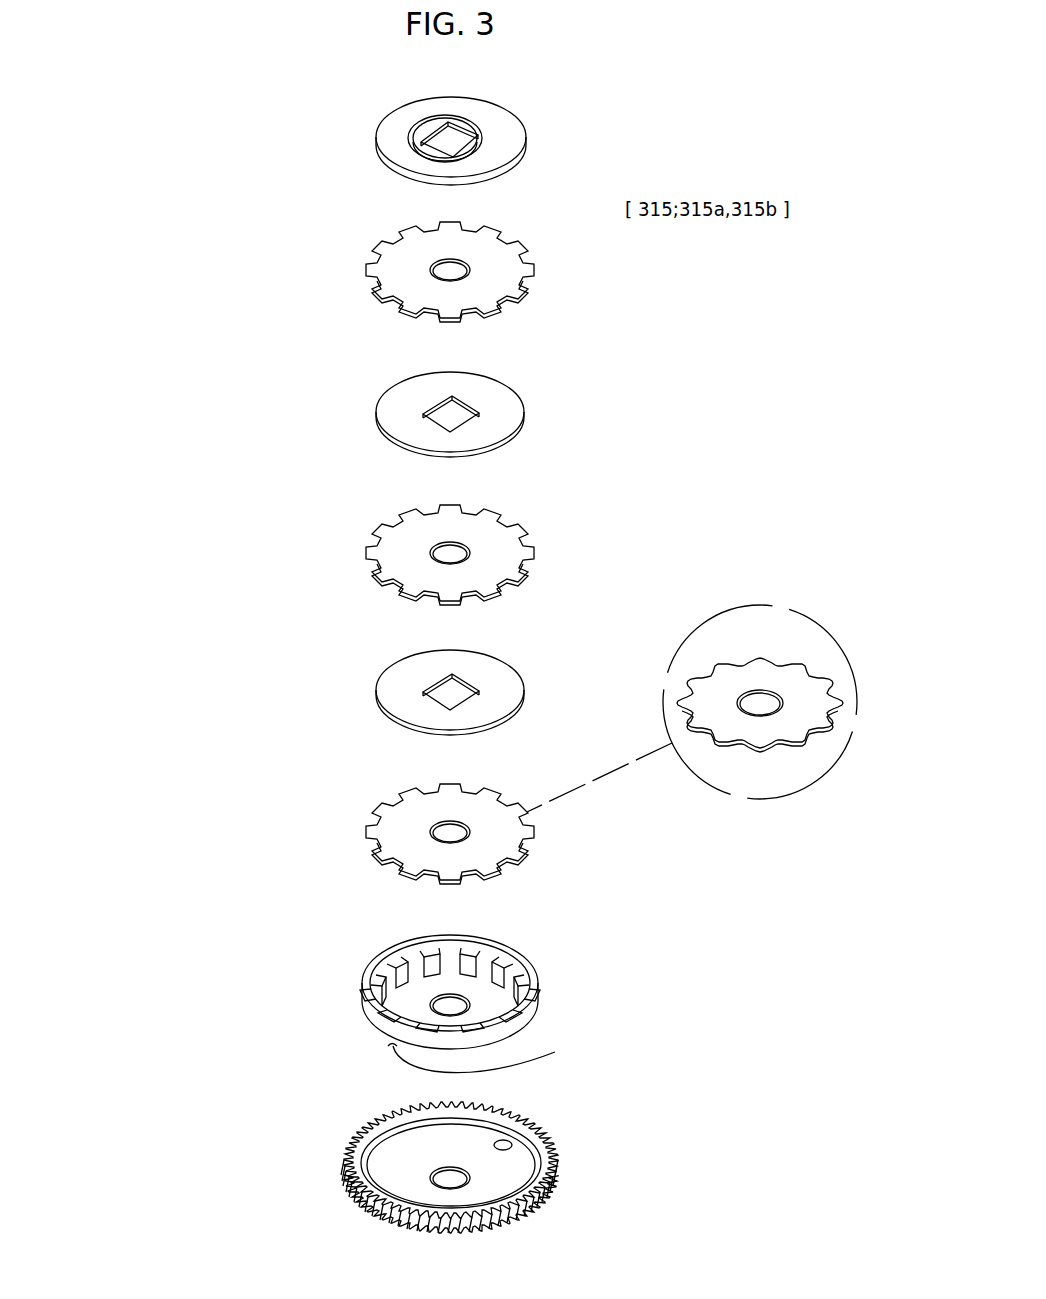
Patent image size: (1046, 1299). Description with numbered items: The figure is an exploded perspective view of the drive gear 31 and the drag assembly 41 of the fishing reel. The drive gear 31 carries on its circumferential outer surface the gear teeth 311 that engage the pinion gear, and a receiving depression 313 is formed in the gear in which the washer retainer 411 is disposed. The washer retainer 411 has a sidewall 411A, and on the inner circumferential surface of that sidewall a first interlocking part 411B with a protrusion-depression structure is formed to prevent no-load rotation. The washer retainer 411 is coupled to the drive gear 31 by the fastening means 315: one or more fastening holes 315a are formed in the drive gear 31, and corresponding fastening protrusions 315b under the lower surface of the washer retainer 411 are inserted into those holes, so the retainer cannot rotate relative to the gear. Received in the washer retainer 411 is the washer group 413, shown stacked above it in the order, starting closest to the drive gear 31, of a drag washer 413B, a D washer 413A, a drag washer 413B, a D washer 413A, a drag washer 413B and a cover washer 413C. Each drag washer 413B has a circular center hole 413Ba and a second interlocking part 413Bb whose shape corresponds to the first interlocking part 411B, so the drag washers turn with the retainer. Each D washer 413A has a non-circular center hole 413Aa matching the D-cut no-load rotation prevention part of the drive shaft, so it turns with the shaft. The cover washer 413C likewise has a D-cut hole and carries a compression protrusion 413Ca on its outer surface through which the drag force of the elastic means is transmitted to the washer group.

The drag assembly 41 is at (77, 164).
The washer group 413 is at (183, 217).
The cover washer 413C is at (344, 179).
The compression protrusion 413Ca is at (487, 131).
The drag washer 413B is at (334, 276).
The circular center hole 413Ba is at (452, 830).
The second interlocking part 413Bb is at (527, 858).
The D washer 413A is at (334, 417).
The non-circular center hole 413Aa is at (455, 693).
The washer retainer 411 is at (334, 1011).
The sidewall 411A is at (525, 1020).
The first interlocking part 411B is at (500, 967).
The drive gear 31 is at (329, 1198).
The gear teeth 311 is at (555, 1185).
The receiving depression 313 is at (414, 1151).
The fastening means 315 is at (636, 1045).
The fastening holes 315a is at (505, 1145).
The fastening protrusions 315b is at (555, 1052).